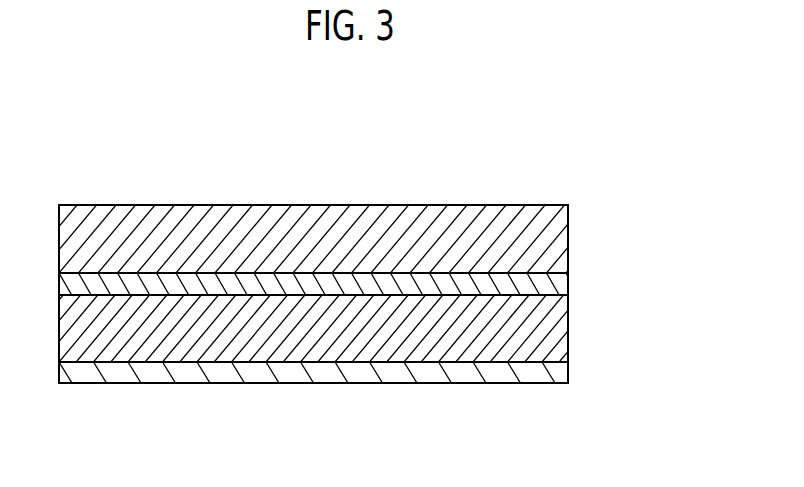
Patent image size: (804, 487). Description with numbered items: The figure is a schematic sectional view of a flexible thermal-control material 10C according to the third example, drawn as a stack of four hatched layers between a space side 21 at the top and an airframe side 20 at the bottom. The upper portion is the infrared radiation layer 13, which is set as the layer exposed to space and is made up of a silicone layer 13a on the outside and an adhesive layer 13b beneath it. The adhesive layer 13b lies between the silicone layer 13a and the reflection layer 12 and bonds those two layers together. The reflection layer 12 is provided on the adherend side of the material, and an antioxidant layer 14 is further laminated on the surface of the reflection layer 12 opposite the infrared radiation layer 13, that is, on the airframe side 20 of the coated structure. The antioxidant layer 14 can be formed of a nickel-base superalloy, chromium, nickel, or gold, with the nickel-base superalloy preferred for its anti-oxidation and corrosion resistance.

The flexible thermal-control material 10C is at (557, 128).
The infrared radiation layer 13 is at (348, 253).
The silicone layer 13a is at (568, 238).
The adhesive layer 13b is at (568, 280).
The reflection layer 12 is at (568, 323).
The antioxidant layer 14 is at (568, 368).
The space side 21 is at (313, 181).
The airframe side 20 is at (313, 411).